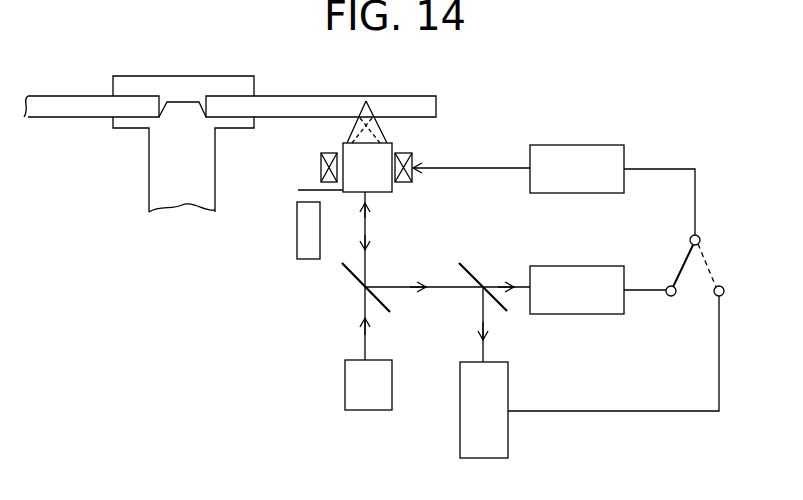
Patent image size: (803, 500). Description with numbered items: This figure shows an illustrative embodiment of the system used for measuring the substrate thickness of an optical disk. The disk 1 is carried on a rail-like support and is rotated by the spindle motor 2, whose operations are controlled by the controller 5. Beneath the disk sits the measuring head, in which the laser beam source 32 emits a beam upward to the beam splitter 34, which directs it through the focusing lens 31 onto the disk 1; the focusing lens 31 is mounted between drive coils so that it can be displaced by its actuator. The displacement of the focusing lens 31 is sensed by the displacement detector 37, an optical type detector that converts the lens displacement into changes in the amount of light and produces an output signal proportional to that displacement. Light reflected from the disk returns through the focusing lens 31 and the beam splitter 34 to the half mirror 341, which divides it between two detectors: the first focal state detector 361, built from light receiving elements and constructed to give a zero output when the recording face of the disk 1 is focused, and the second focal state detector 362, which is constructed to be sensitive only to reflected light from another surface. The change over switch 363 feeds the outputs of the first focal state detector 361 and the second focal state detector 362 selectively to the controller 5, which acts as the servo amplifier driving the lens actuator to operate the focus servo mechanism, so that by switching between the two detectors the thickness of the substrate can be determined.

The disk 1 is at (290, 105).
The spindle motor 2 is at (149, 177).
The focusing lens 31 is at (385, 152).
The laser beam source 32 is at (345, 393).
The beam splitter 34 is at (360, 286).
The half mirror 341 is at (468, 272).
The displacement detector 37 is at (297, 240).
The controller 5 is at (566, 145).
The first focal state detector 361 is at (563, 266).
The second focal state detector 362 is at (508, 380).
The change over switch 363 is at (708, 263).